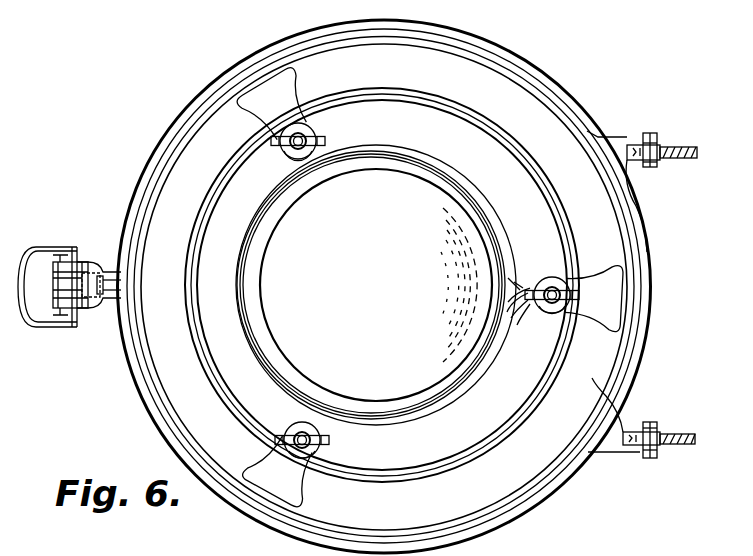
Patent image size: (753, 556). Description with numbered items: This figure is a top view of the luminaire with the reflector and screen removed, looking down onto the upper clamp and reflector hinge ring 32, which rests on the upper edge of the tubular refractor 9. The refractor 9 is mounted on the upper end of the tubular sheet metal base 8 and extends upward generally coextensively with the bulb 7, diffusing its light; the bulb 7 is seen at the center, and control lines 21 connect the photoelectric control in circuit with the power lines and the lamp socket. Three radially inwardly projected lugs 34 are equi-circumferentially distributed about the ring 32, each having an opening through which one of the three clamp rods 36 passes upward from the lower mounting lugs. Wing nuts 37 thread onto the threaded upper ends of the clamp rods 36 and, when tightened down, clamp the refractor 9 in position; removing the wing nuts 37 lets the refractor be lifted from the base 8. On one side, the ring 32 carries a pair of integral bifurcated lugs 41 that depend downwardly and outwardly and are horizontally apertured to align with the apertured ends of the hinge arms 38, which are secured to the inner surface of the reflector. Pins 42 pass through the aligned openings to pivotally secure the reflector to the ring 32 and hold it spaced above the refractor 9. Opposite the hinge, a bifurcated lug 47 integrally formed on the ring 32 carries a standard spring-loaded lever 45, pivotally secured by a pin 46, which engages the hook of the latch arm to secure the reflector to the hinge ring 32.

The bulb 7 is at (460, 217).
The tubular sheet metal base 8 is at (240, 358).
The tubular refractor 9 is at (180, 385).
The control lines 21 is at (522, 318).
The upper clamp and reflector hinge ring 32 is at (290, 44).
The radially inwardly projected lugs 34 is at (300, 93).
The clamp rods 36 is at (286, 156).
The wing nuts 37 is at (327, 140).
The hinge arms 38 is at (677, 147).
The bifurcated lugs 41 is at (632, 137).
The pins 42 is at (651, 170).
The spring-loaded lever 45 is at (56, 329).
The pin 46 is at (60, 290).
The bifurcated lug 47 is at (107, 302).